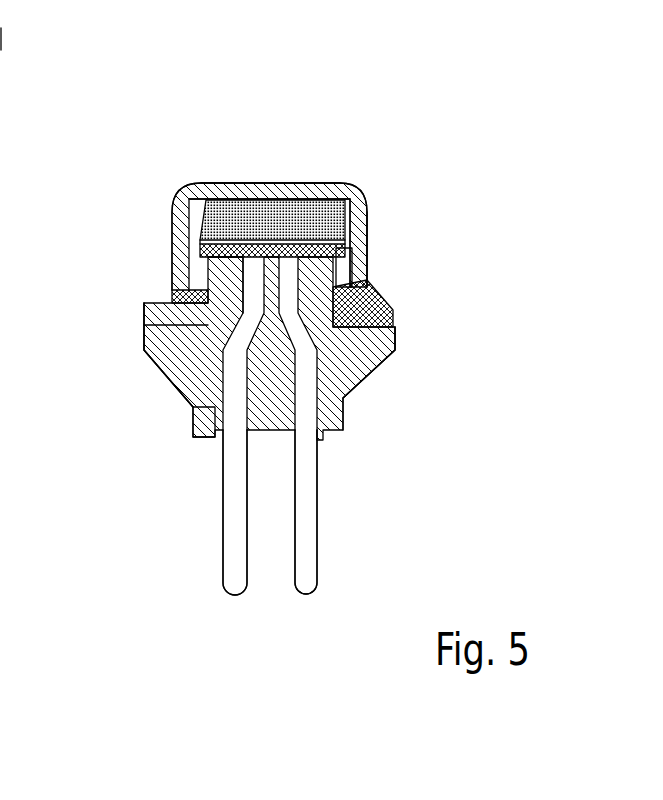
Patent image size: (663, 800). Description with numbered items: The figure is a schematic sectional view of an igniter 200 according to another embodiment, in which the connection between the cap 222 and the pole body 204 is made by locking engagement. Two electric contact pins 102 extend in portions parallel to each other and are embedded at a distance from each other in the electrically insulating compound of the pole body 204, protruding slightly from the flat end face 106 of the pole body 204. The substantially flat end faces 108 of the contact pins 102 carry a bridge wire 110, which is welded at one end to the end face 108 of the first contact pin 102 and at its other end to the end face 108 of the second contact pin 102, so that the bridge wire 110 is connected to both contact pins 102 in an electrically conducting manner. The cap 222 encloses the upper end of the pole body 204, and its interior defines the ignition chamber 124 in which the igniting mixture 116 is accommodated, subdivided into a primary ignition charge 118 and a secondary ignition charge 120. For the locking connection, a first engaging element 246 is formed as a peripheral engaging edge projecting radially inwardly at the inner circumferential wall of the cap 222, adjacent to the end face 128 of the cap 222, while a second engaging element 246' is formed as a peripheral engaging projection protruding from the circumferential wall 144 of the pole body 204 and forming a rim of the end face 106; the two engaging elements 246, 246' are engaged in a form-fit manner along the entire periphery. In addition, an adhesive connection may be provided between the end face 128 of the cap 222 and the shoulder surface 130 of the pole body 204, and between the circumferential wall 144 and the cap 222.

The sensor assembly 200 is at (162, 88).
The contact pins 102 is at (300, 550).
The end face 106 is at (367, 250).
The end faces of the contact pins 108 is at (239, 256).
The bridge wire 110 is at (283, 250).
The igniting mixture 116 is at (360, 207).
The primary ignition charge 118 is at (212, 243).
The secondary ignition charge 120 is at (212, 221).
The ignition chamber 124 is at (310, 183).
The end face of the cap 128 is at (147, 347).
The shoulder surface 130 is at (385, 360).
The circumferential wall 144 is at (146, 308).
The pole body 204 is at (191, 416).
The cap 222 is at (173, 300).
The first engaging element 246 is at (419, 336).
The second engaging element 246' is at (416, 283).